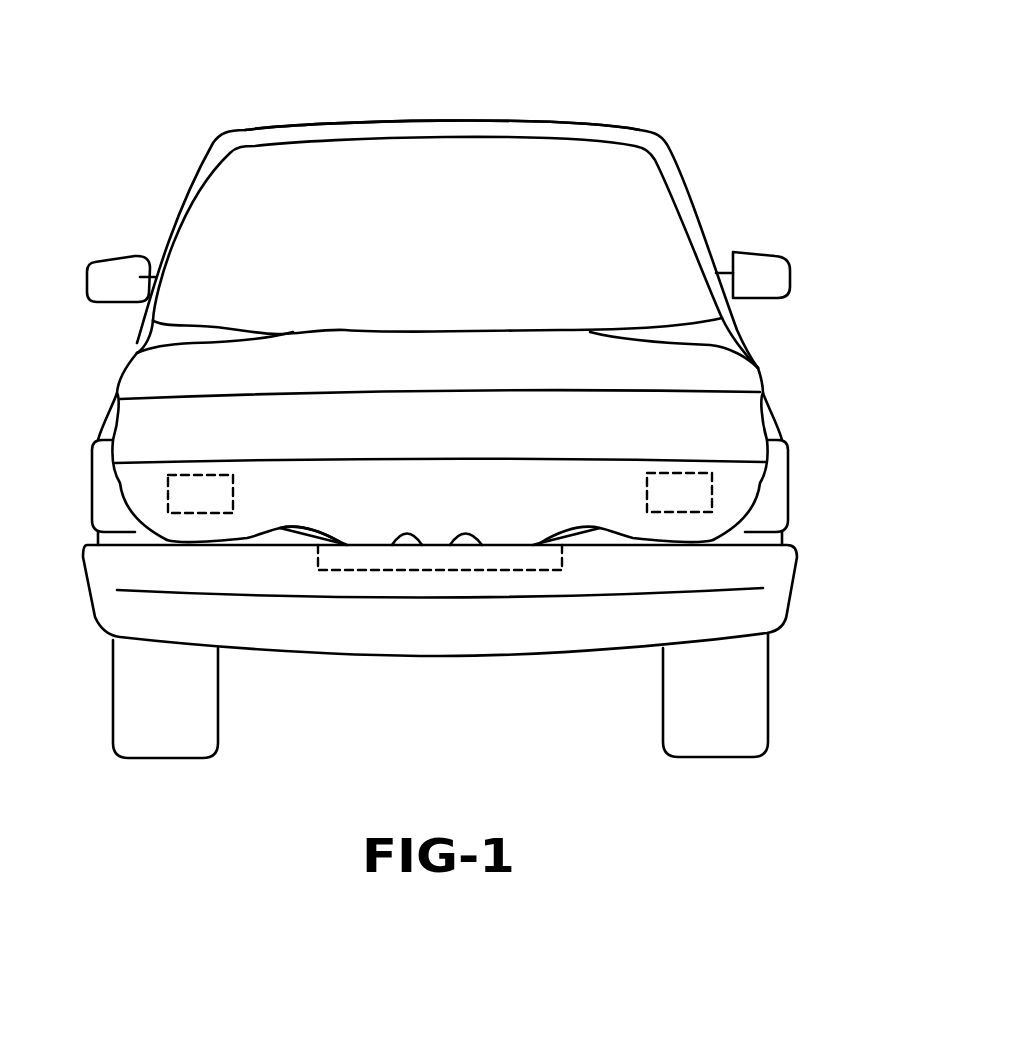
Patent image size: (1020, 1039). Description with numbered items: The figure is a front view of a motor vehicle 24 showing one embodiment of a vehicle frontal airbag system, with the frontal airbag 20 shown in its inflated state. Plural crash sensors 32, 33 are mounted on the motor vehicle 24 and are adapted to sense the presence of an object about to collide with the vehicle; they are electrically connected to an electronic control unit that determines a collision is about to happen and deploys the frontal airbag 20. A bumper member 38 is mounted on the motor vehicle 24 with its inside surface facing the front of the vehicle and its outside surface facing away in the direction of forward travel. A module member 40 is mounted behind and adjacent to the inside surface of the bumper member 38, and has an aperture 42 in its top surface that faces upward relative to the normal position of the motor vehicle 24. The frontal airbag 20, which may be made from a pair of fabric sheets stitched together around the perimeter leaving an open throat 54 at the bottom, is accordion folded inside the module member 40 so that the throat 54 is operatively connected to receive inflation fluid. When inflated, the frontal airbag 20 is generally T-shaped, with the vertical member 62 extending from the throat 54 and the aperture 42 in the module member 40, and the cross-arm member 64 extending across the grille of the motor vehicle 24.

The frontal airbag 20 is at (768, 364).
The motor vehicle 24 is at (600, 123).
The crash sensor 32 is at (700, 485).
The crash sensor 33 is at (183, 487).
The bumper member 38 is at (793, 578).
The module member 40 is at (521, 570).
The aperture 42 is at (392, 545).
The throat 54 is at (482, 545).
The vertical member 62 is at (345, 530).
The cross-arm member 64 is at (127, 387).